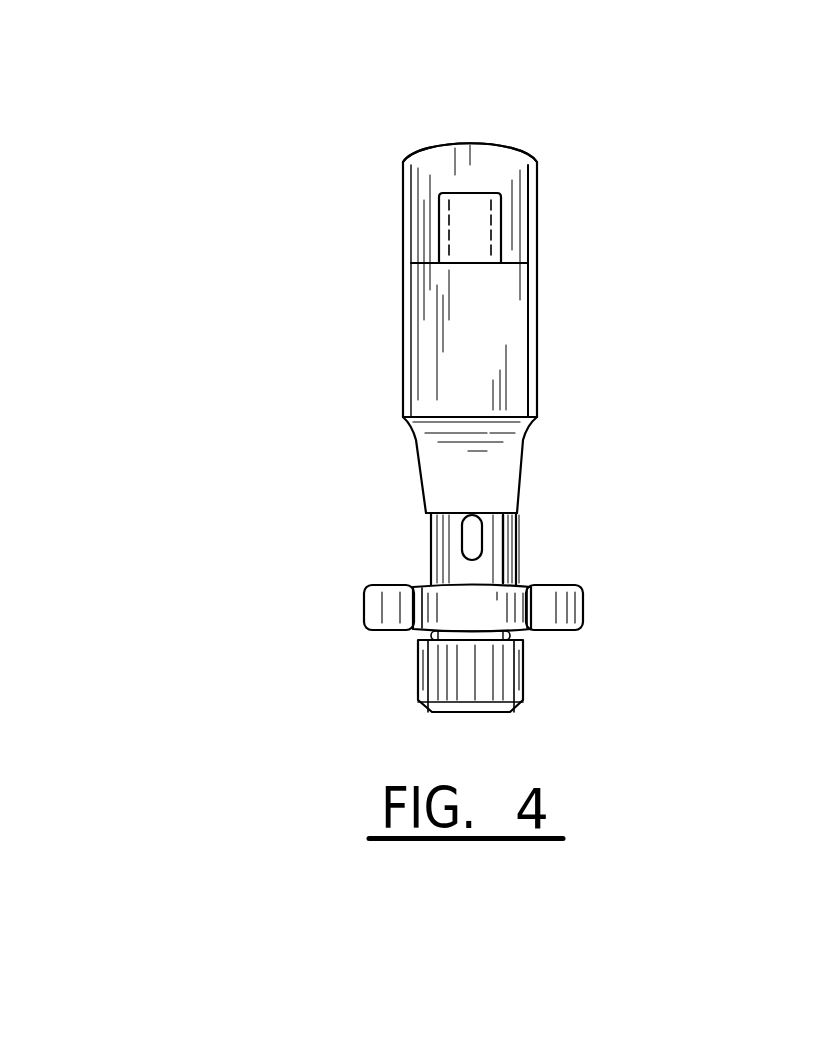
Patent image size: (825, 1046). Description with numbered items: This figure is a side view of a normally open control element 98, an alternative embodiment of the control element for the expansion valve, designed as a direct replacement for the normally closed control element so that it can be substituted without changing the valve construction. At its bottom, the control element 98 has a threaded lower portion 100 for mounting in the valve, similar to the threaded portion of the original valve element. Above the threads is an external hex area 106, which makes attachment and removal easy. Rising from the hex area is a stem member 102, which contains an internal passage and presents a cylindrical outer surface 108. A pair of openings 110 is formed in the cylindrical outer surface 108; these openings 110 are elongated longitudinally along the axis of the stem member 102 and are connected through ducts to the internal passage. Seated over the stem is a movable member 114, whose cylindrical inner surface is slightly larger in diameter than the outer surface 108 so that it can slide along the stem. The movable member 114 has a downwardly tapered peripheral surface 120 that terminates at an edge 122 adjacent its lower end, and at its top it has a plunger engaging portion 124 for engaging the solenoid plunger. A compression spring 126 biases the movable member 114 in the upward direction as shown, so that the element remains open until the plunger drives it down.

The control element 98 is at (629, 259).
The threaded lower portion 100 is at (523, 675).
The stem member 102 is at (503, 543).
The external hex area 106 is at (583, 607).
The cylindrical outer surface 108 is at (517, 559).
The openings 110 is at (466, 547).
The movable member 114 is at (537, 348).
The downwardly tapered peripheral surface 120 is at (527, 458).
The edge 122 is at (260, 433).
The plunger engaging portion 124 is at (458, 143).
The compression spring 126 is at (495, 227).